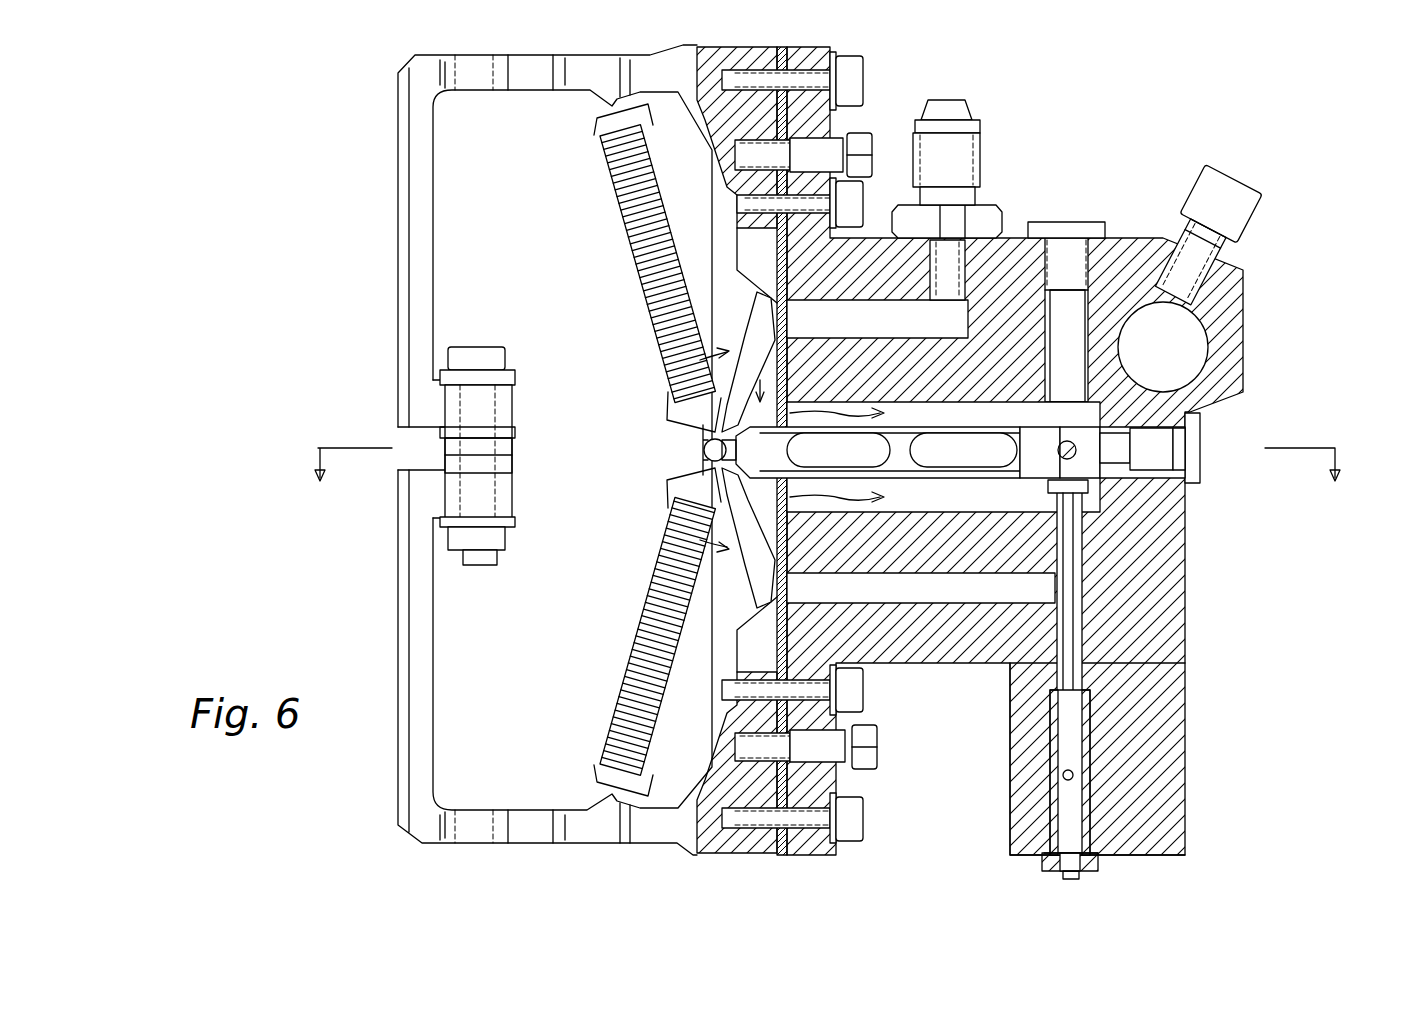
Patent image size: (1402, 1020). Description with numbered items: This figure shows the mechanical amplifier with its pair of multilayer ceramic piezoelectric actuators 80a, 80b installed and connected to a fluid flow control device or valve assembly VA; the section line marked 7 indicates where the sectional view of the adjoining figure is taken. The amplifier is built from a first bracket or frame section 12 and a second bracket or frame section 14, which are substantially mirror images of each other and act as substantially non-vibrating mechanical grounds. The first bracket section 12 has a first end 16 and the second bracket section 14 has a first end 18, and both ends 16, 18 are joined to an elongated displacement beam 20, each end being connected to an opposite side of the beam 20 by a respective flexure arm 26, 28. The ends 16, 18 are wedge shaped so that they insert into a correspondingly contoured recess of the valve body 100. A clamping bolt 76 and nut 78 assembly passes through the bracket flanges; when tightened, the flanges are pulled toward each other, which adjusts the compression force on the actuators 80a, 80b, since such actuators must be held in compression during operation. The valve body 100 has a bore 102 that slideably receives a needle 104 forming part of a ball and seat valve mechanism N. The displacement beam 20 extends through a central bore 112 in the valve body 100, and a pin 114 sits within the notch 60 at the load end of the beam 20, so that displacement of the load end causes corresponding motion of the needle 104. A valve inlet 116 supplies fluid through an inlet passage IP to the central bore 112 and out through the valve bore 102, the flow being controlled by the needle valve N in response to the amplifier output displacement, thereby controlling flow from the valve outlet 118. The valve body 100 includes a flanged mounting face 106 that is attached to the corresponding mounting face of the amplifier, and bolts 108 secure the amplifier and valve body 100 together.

The first bracket or frame section 12 is at (522, 95).
The second bracket or frame section 14 is at (535, 806).
The first end of first bracket section 16 is at (752, 250).
The first end of second bracket section 18 is at (745, 660).
The elongated displacement beam 20 is at (915, 480).
The flexure arm 26 is at (705, 360).
The flexure arm 28 is at (717, 553).
The notch 60 is at (1160, 398).
The clamping bolt 76 is at (505, 362).
The nut 78 is at (505, 540).
The multilayer ceramic piezoelectric actuator 80a is at (612, 220).
The multilayer ceramic piezoelectric actuator 80b is at (620, 650).
The valve body 100 is at (970, 647).
The bore 102 is at (1072, 660).
The needle 104 is at (1078, 625).
The flanged mounting face 106 is at (840, 620).
The bolts 108 is at (860, 205).
The central bore 112 is at (977, 515).
The pin 114 is at (1100, 455).
The valve inlet 116 is at (992, 150).
The valve outlet 118 is at (1077, 874).
The inlet passage IP is at (945, 322).
The valve assembly VA is at (1112, 140).
The ball and seat valve mechanism N is at (1028, 880).
The section line 7- 7 is at (828, 490).